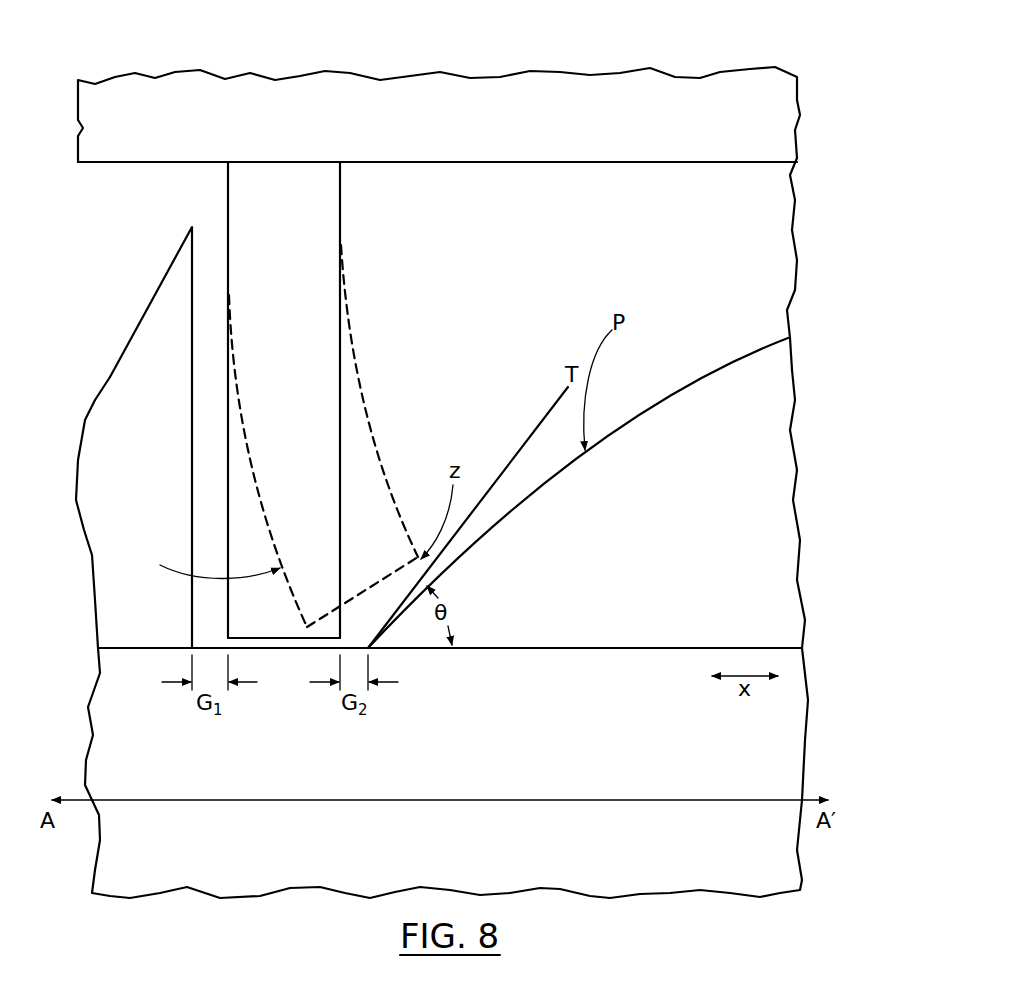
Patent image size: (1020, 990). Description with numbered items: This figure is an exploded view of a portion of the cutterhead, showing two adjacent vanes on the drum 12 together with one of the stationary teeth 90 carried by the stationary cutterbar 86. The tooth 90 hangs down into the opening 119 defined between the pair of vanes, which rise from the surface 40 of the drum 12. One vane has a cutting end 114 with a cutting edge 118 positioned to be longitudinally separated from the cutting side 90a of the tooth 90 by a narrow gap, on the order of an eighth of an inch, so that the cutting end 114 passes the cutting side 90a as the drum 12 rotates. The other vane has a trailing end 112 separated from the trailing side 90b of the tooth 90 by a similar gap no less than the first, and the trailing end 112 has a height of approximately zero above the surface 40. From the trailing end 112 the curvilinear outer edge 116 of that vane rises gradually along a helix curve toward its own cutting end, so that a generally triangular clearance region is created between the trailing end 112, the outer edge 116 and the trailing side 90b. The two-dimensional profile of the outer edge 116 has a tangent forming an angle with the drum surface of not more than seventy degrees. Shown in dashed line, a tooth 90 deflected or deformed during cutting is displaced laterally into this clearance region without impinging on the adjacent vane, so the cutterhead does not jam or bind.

The stationary cutterbar 86 is at (657, 93).
The drum 12 is at (788, 717).
The surface of the drum 40 is at (778, 748).
The stationary tooth 90 is at (299, 400).
The cutting side of the tooth 90a is at (226, 276).
The trailing side of the tooth 90b is at (345, 248).
The cutting end 114 is at (181, 234).
The outer edge 116 is at (105, 378).
The cutting edge 118 is at (196, 436).
The opening 119 is at (402, 478).
The trailing end 112 is at (365, 641).